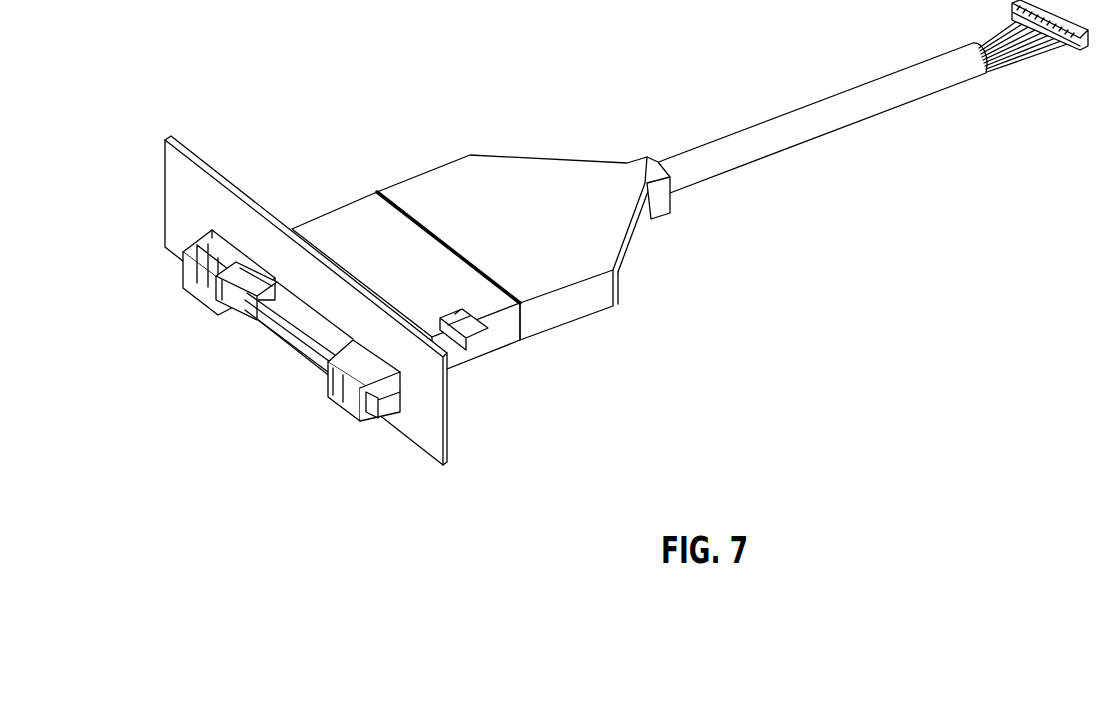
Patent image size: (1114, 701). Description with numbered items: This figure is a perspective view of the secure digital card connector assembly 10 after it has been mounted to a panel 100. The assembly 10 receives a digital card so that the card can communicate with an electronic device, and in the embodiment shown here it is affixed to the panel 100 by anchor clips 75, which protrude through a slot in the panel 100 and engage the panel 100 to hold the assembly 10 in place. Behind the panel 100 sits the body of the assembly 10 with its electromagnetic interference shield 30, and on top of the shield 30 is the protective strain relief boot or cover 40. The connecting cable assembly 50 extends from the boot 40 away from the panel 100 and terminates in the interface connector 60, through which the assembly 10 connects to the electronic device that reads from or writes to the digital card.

The secure digital card connector assembly 10 is at (547, 101).
The electromagnetic interference shield 30 is at (441, 293).
The protective boot or cover 40 is at (501, 229).
The connecting cable assembly 50 is at (810, 125).
The interface connector 60 is at (1083, 52).
The anchor clip 75 is at (360, 421).
The panel 100 is at (431, 437).